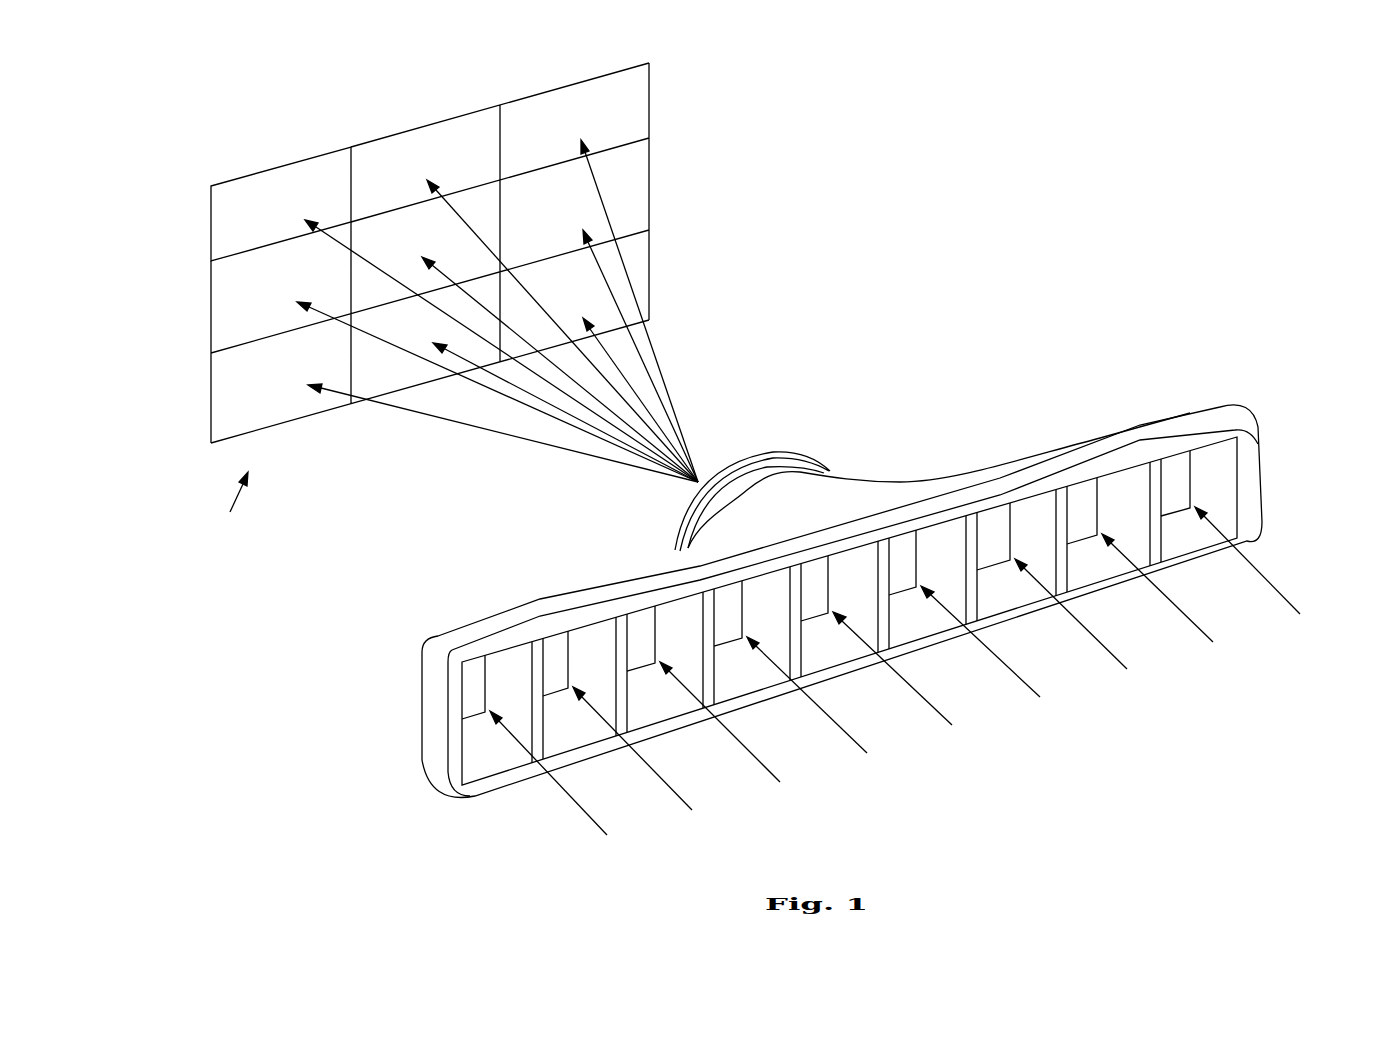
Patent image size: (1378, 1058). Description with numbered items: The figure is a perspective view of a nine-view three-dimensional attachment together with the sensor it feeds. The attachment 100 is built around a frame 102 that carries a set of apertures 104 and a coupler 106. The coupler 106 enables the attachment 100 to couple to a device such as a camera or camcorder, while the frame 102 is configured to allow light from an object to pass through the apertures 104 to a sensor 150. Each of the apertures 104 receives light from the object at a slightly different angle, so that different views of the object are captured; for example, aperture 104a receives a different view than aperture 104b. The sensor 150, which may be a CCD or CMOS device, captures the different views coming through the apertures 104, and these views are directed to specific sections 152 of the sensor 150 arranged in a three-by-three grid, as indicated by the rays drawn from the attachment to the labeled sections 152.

The sensor 150 is at (198, 104).
The sections 152 is at (299, 172).
The attachment 100 is at (1175, 292).
The frame 102 is at (850, 484).
The apertures 104 is at (478, 768).
The aperture 104a is at (750, 683).
The aperture 104b is at (1222, 490).
The coupler 106 is at (752, 458).